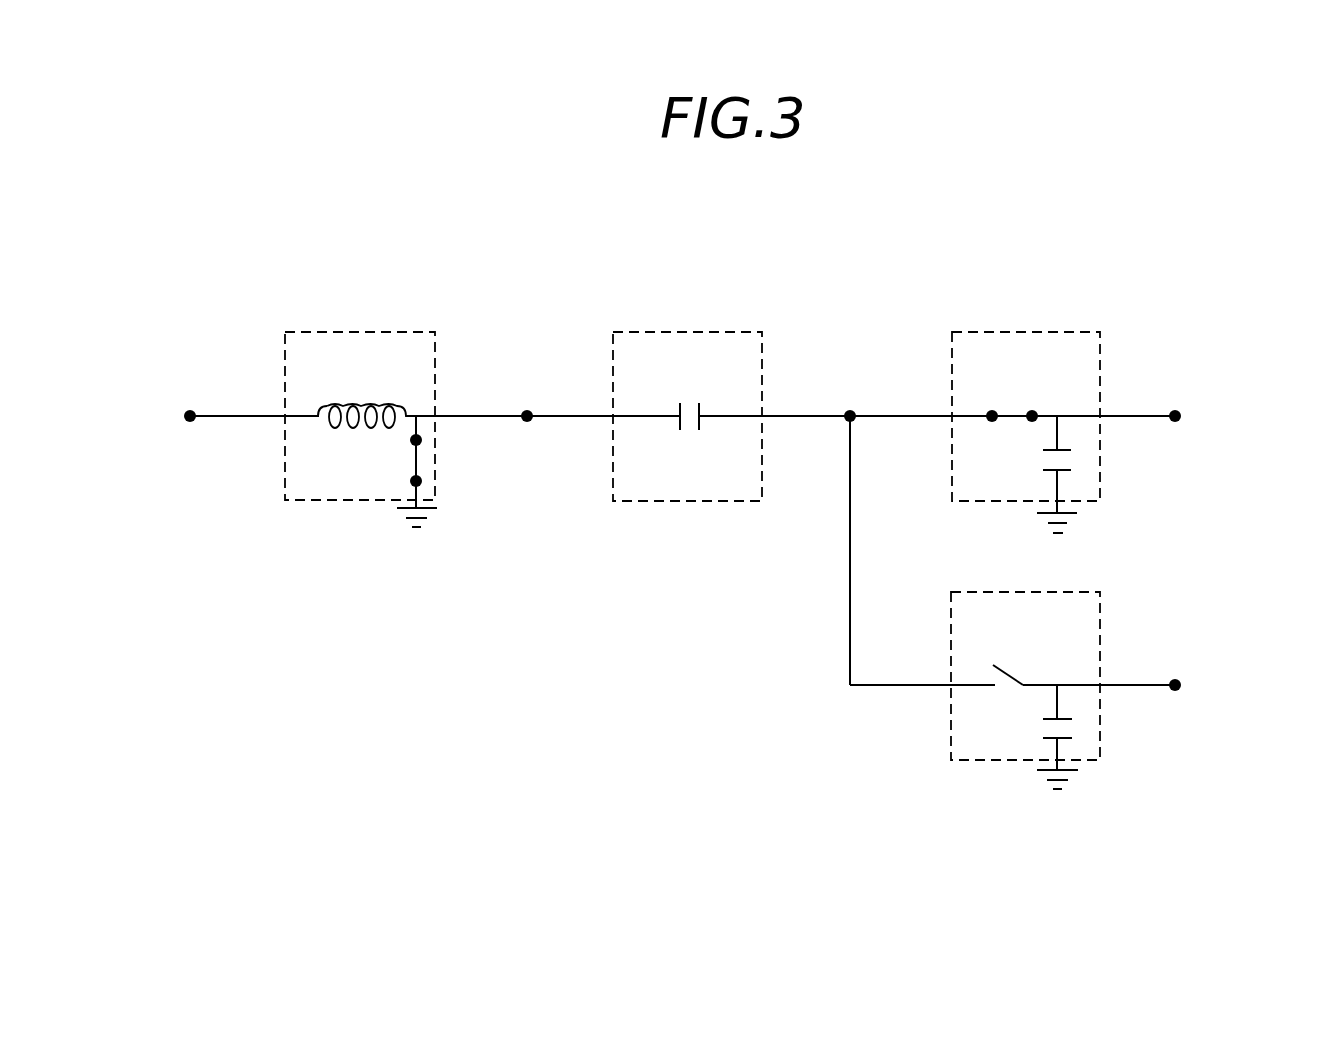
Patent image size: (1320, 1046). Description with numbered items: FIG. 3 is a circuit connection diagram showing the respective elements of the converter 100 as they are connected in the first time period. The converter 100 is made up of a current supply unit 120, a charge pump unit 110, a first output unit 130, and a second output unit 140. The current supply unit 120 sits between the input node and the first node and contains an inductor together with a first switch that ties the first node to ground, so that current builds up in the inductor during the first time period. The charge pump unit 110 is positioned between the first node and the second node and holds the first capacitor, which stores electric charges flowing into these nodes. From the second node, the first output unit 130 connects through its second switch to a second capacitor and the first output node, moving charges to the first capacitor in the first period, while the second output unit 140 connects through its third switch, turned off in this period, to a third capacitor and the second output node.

The converter 100 is at (298, 172).
The charge pump unit 110 is at (683, 331).
The current supply unit 120 is at (355, 331).
The first output unit 130 is at (1020, 331).
The second output unit 140 is at (993, 762).